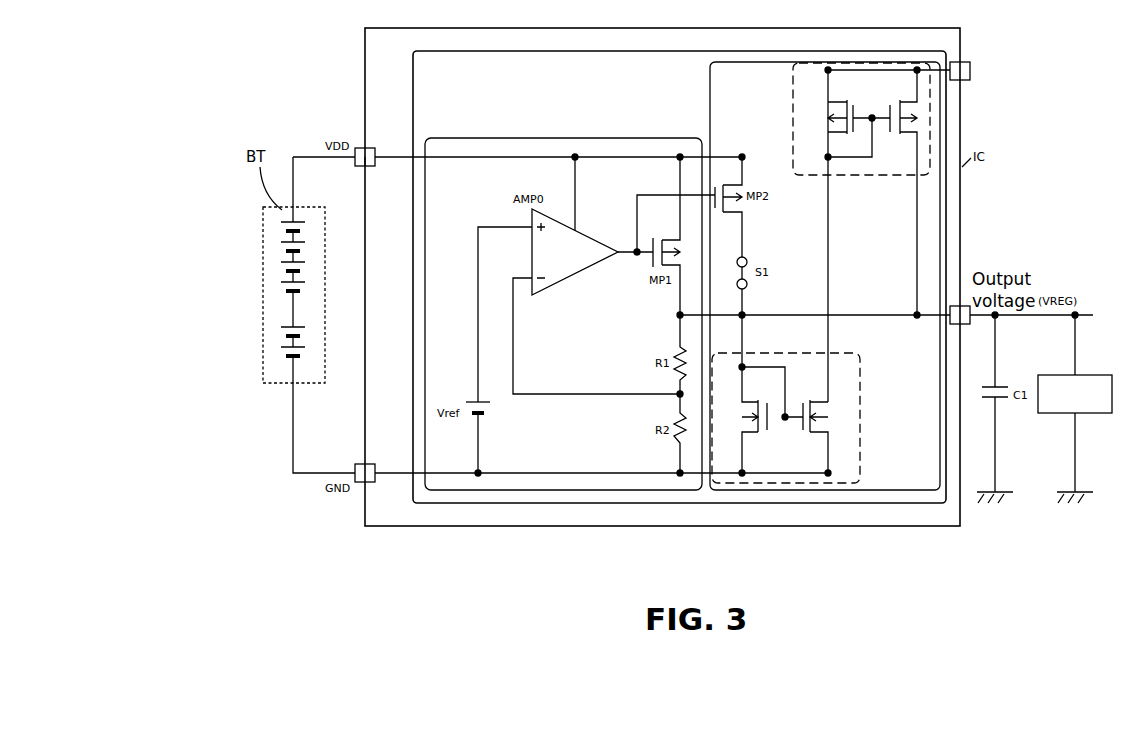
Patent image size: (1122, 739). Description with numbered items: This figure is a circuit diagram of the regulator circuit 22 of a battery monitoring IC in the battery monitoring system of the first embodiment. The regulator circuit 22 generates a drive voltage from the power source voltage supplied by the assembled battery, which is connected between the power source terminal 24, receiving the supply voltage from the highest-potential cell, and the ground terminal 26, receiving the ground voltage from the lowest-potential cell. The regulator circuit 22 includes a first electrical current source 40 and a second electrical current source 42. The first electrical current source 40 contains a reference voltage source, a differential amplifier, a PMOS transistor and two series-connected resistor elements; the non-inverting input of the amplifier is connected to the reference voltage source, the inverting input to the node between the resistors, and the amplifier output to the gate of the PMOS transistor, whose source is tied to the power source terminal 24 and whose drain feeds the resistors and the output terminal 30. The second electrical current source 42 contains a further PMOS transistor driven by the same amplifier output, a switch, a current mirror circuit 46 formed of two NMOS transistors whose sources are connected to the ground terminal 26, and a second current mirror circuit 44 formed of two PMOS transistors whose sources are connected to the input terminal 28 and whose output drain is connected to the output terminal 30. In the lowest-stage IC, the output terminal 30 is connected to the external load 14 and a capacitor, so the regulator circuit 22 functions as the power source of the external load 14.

The external load 14 is at (1093, 373).
The regulator circuit 22 is at (411, 72).
The power source terminal 24 is at (372, 147).
The ground terminal 26 is at (371, 482).
The input terminal 28 is at (963, 62).
The output terminal 30 is at (966, 324).
The first electrical current source 40 is at (522, 137).
The second electrical current source 42 is at (708, 94).
The P-channel transistor block (MP3, MP4) 44 is at (805, 178).
The current mirror circuit 46 is at (860, 382).